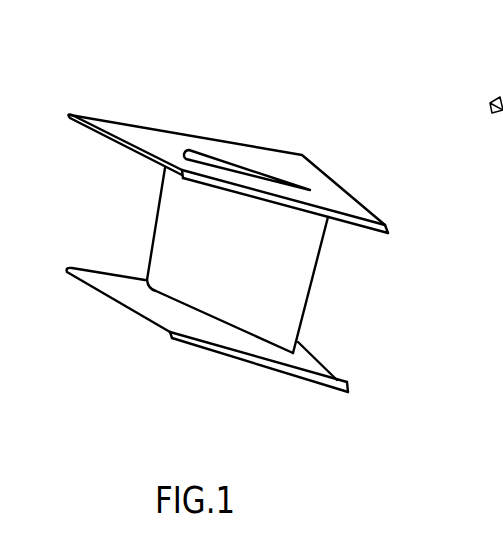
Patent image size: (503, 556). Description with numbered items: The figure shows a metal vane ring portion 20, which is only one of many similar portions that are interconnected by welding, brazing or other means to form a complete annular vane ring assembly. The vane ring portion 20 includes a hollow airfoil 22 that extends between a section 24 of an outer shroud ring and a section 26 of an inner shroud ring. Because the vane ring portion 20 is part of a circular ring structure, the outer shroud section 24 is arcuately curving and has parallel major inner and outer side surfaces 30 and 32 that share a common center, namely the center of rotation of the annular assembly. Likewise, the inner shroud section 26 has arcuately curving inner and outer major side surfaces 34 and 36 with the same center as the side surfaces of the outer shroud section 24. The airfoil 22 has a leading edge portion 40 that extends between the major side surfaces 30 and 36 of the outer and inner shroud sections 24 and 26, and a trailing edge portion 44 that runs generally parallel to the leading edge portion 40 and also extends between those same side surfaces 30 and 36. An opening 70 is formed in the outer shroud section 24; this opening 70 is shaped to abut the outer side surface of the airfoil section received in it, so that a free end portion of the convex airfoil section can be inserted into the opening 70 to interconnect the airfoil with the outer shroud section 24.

The vane ring portion 20 is at (136, 80).
The hollow airfoil 22 is at (143, 234).
The outer shroud section 24 is at (312, 115).
The inner shroud section 26 is at (177, 348).
The inner side surface of outer shroud section 30 is at (357, 224).
The outer side surface of outer shroud section 32 is at (388, 223).
The inner side surface of inner shroud section 34 is at (343, 393).
The outer side surface of inner shroud section 36 is at (335, 379).
The leading edge portion 40 is at (158, 210).
The trailing edge portion 44 is at (303, 315).
The opening 70 is at (226, 161).